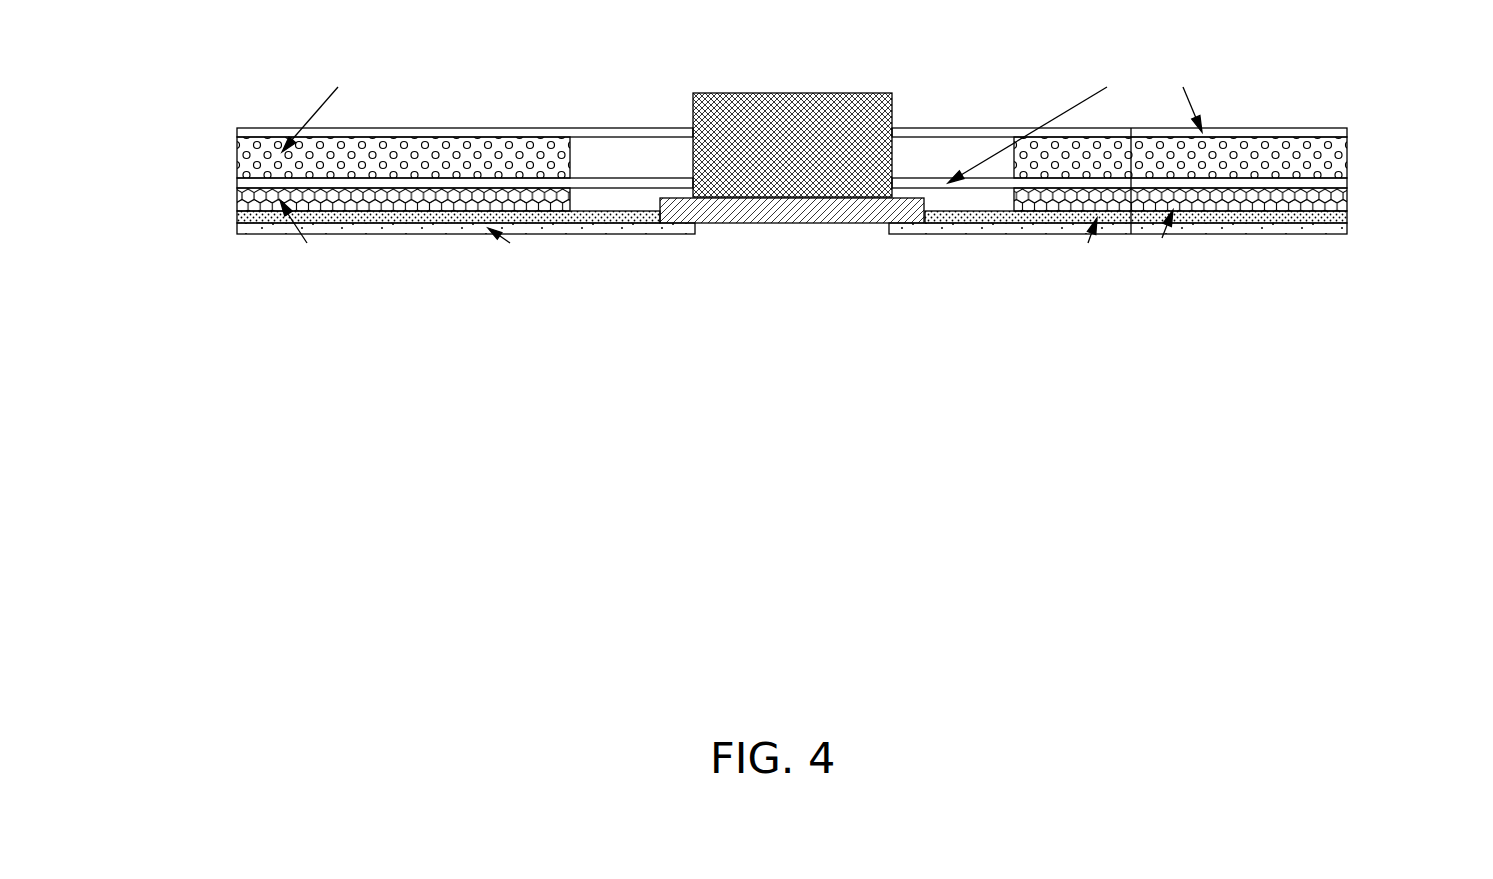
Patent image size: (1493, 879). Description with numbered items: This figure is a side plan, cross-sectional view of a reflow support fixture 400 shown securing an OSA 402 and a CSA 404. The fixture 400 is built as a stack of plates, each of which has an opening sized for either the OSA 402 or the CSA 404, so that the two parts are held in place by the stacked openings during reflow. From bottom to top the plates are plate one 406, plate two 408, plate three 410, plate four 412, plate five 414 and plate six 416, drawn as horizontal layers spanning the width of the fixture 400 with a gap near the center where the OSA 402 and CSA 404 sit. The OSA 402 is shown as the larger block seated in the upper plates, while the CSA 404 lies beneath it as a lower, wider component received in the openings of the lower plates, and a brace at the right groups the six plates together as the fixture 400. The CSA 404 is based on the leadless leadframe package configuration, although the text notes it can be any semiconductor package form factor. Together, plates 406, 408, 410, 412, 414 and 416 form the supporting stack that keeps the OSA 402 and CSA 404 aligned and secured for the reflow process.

The reflow support fixture 400 is at (800, 188).
The OSA 402 is at (795, 93).
The CSA 404 is at (803, 226).
The plate 1 406 is at (237, 233).
The plate 2 408 is at (237, 217).
The plate 3 410 is at (237, 198).
The plate 4 412 is at (237, 188).
The plate 5 414 is at (237, 153).
The plate 6 416 is at (237, 129).